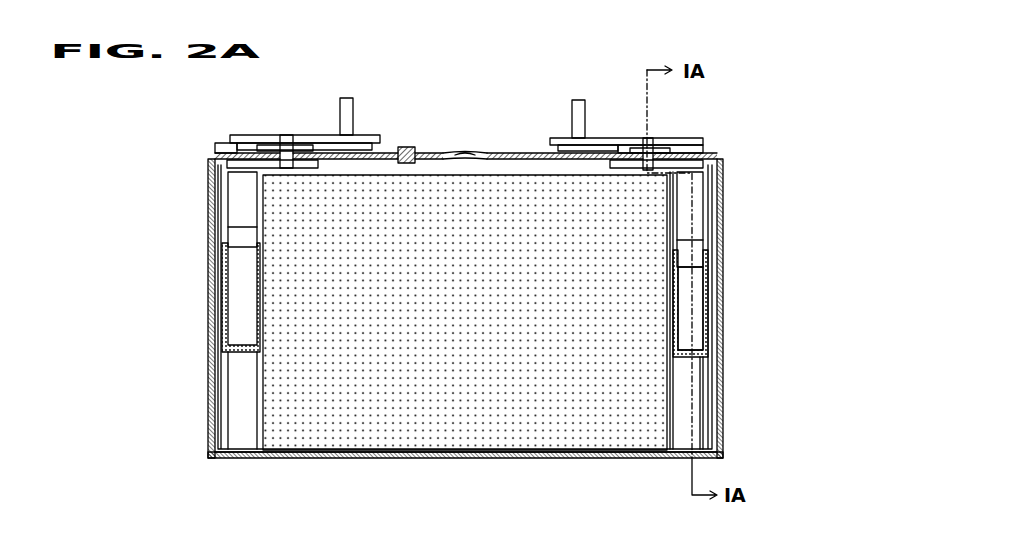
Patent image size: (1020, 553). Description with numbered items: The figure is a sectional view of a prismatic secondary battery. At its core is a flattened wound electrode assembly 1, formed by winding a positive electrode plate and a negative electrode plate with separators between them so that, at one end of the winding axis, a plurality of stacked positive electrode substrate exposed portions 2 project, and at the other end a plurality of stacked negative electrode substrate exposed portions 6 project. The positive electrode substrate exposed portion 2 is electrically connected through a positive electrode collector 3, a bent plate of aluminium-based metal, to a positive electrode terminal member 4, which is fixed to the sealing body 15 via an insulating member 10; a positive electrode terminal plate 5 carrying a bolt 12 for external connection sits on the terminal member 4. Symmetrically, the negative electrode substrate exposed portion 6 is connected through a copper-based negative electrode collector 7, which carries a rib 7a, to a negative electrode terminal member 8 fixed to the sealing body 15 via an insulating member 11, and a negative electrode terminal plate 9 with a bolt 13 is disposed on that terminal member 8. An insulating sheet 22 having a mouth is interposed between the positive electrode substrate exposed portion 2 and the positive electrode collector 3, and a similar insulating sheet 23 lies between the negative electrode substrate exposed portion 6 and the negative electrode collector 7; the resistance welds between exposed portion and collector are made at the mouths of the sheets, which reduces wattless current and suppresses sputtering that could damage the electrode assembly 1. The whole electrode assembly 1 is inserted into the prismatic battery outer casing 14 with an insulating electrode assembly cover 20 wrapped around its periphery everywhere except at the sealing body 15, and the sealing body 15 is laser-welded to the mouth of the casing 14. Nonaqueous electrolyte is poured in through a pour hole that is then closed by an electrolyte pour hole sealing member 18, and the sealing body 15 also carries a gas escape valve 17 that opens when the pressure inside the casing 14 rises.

The flattened wound electrode assembly 1 is at (427, 400).
The positive electrode substrate exposed portion 2 is at (235, 388).
The positive electrode collector 3 is at (230, 185).
The positive electrode terminal member 4 is at (288, 143).
The positive electrode terminal plate 5 is at (257, 148).
The negative electrode substrate exposed portion 6 is at (695, 400).
The negative electrode collector 7 is at (697, 218).
The rib 7a is at (692, 292).
The negative electrode terminal member 8 is at (643, 132).
The negative electrode terminal plate 9 is at (690, 137).
The insulating member 10 is at (232, 138).
The insulating member 11 is at (703, 143).
The bolt 12 is at (350, 115).
The bolt 13 is at (590, 108).
The battery outer casing 14 is at (208, 458).
The sealing body 15 is at (518, 154).
The gas escape valve 17 is at (470, 155).
The electrolyte pour hole sealing member 18 is at (412, 147).
The insulating electrode assembly cover 20 is at (215, 425).
The insulating sheet 22 is at (695, 352).
The insulating sheet 23 is at (228, 340).